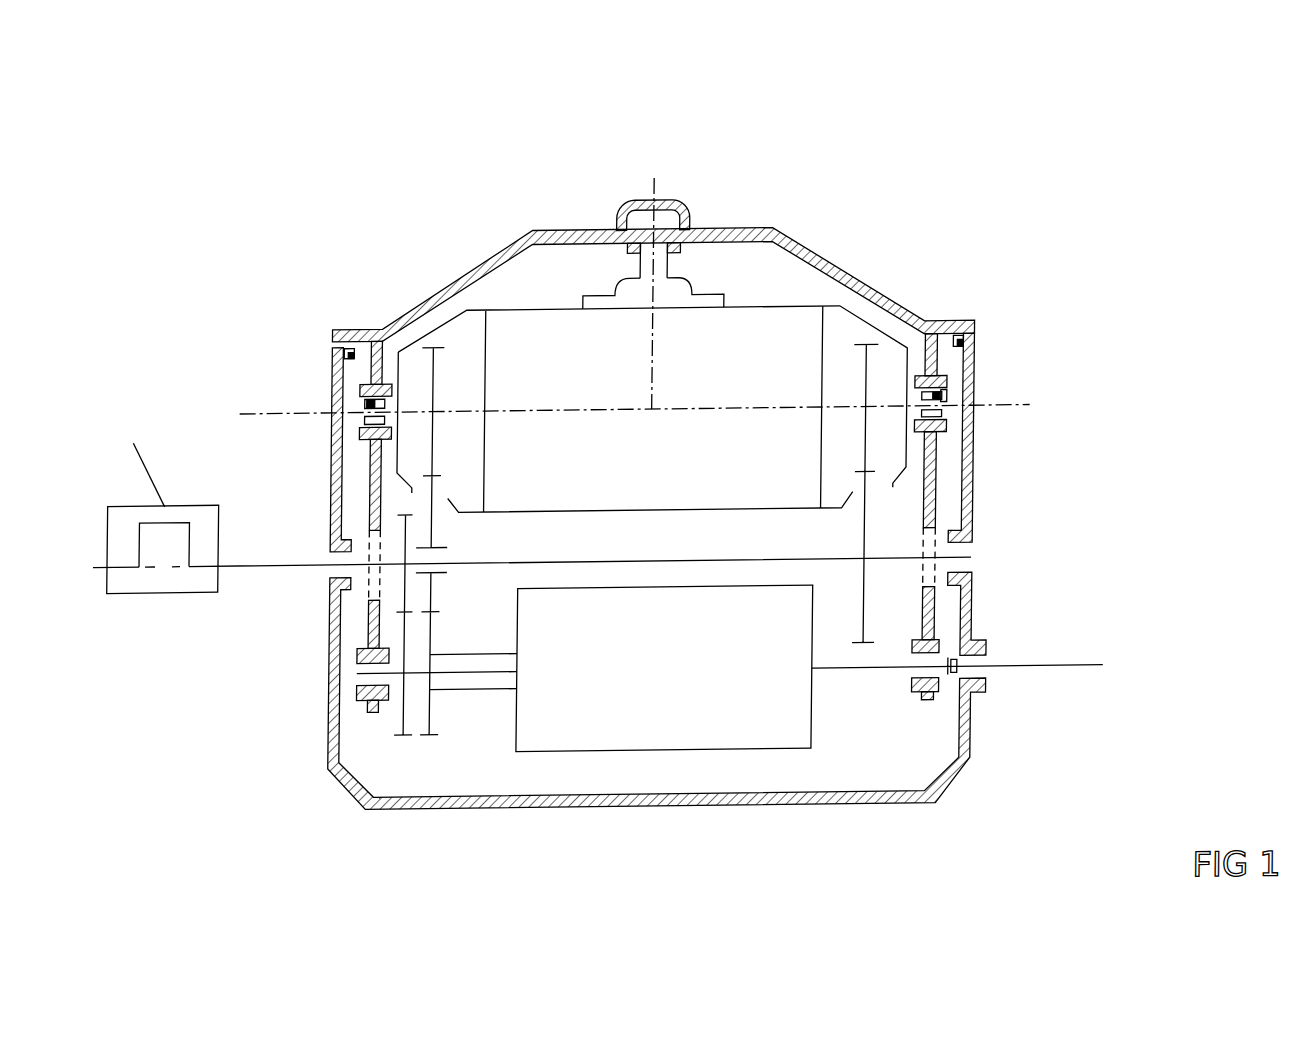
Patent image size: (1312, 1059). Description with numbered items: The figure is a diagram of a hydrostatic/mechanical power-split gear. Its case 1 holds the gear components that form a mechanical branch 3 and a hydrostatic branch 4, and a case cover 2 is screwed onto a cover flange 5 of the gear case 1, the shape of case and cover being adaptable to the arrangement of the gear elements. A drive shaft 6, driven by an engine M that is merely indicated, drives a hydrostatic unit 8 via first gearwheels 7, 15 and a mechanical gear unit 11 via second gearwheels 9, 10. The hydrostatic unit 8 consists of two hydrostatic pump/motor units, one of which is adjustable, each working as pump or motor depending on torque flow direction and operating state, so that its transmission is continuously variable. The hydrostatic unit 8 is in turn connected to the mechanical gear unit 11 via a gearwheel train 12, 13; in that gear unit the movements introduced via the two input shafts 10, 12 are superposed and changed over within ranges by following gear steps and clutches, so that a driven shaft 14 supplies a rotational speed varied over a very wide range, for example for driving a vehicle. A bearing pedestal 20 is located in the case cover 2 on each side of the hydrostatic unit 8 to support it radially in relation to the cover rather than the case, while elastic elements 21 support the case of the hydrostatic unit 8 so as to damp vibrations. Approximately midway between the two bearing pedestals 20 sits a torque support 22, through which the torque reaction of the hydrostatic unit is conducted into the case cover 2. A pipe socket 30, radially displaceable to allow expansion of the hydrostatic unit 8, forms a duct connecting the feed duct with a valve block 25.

The case 1 is at (337, 768).
The cover 2 is at (845, 279).
The mechanical branch 3 is at (610, 775).
The hydrostatic branch 4 is at (439, 265).
The cover flange 5 is at (959, 344).
The drive shaft 6 is at (285, 562).
The first gearwheel 7 is at (864, 514).
The hydrostatic unit 8 is at (536, 347).
The second gearwheel 9 is at (406, 567).
The second gearwheel 10 is at (405, 717).
The mechanical gear unit 11 is at (671, 690).
The gearwheel train 12 is at (431, 732).
The gearwheel train 13 is at (432, 455).
The driven shaft 14 is at (1036, 670).
The first gearwheel 15 is at (863, 450).
The bearing pedestal 20 is at (373, 382).
The elastic element 21 is at (341, 348).
The torque support 22 is at (697, 211).
The valve block 25 is at (677, 298).
The pipe socket 30 is at (645, 245).